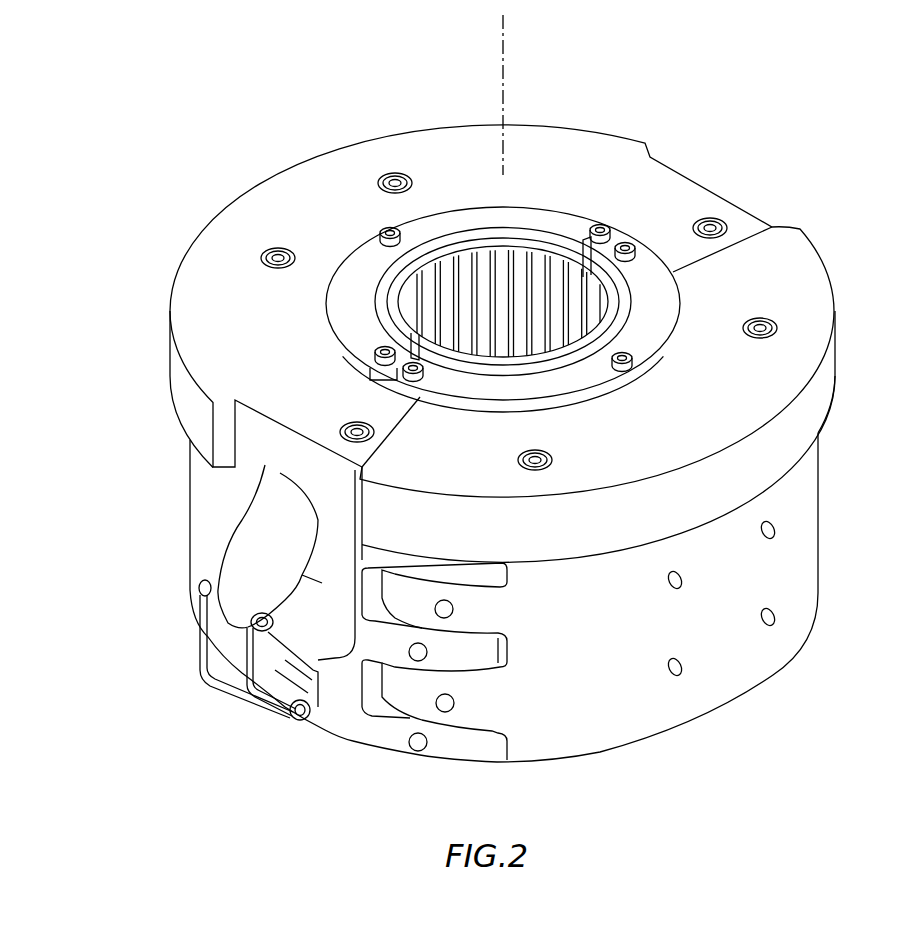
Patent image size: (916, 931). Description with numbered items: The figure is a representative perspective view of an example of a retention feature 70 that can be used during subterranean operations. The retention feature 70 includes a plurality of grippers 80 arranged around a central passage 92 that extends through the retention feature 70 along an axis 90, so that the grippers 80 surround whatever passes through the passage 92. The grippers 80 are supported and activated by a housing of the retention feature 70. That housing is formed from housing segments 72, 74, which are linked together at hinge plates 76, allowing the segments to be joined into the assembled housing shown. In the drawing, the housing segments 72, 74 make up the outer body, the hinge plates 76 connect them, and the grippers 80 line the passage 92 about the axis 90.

The retention feature 70 is at (817, 133).
The housing segment 72 is at (202, 497).
The housing segment 74 is at (797, 540).
The hinge plates 76 is at (445, 748).
The grippers 80 is at (485, 262).
The axis 90 is at (500, 62).
The passage 92 is at (527, 252).